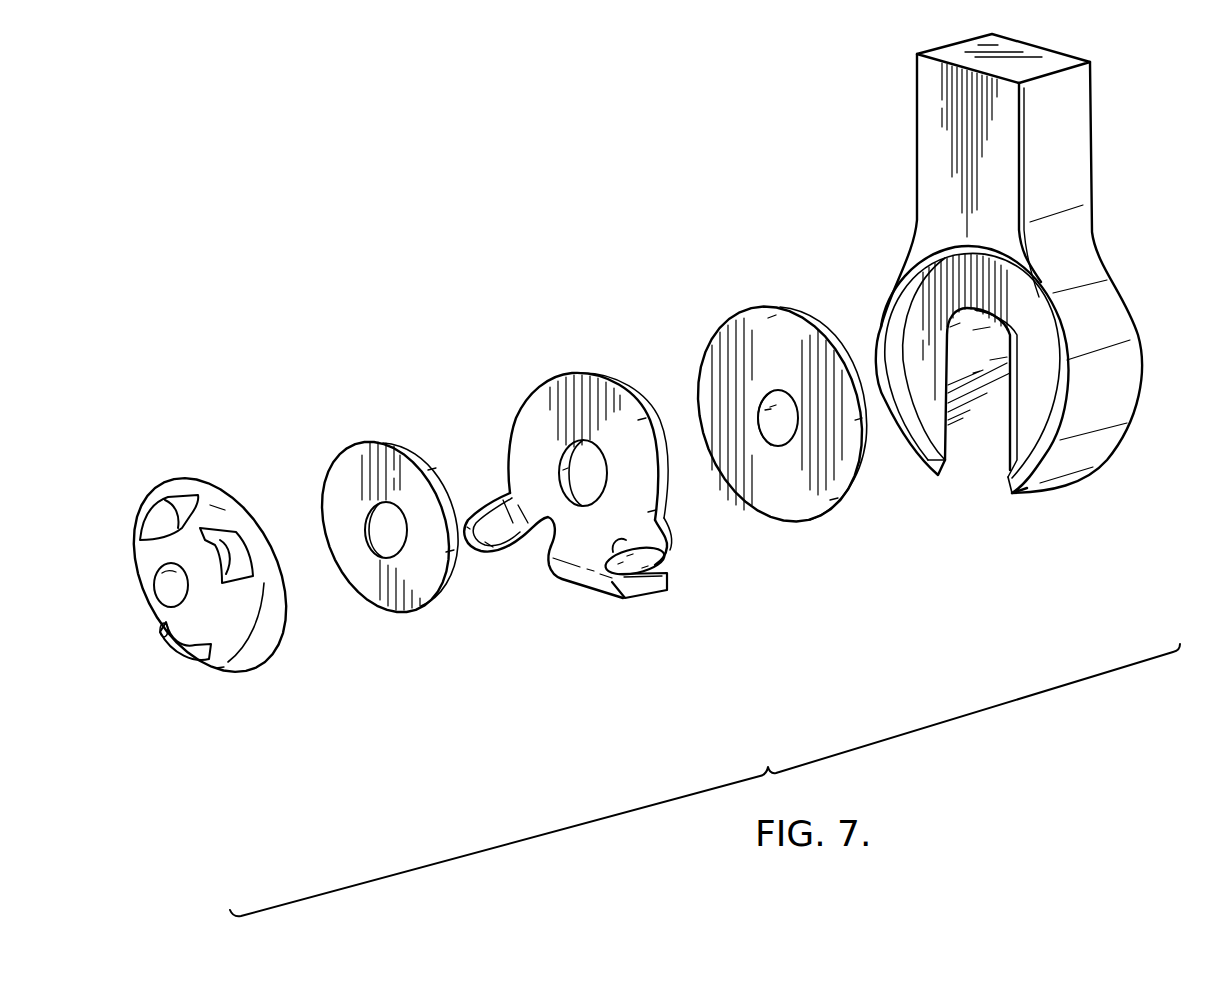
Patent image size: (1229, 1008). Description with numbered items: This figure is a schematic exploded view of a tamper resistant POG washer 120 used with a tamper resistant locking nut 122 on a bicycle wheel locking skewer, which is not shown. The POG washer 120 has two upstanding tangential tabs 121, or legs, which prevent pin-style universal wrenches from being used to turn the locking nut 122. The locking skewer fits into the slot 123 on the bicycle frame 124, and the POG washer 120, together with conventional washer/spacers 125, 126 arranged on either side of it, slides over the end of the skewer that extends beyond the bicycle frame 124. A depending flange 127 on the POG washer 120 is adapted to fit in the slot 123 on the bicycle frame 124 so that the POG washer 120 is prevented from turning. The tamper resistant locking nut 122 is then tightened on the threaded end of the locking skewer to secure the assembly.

The POG washer 120 is at (546, 368).
The upstanding tangential tabs 121 is at (487, 562).
The locking nut 122 is at (185, 680).
The slot 123 is at (972, 420).
The bicycle frame 124 is at (1065, 145).
The washer/spacer 125 is at (747, 320).
The washer/spacer 126 is at (347, 463).
The depending flange 127 is at (645, 601).